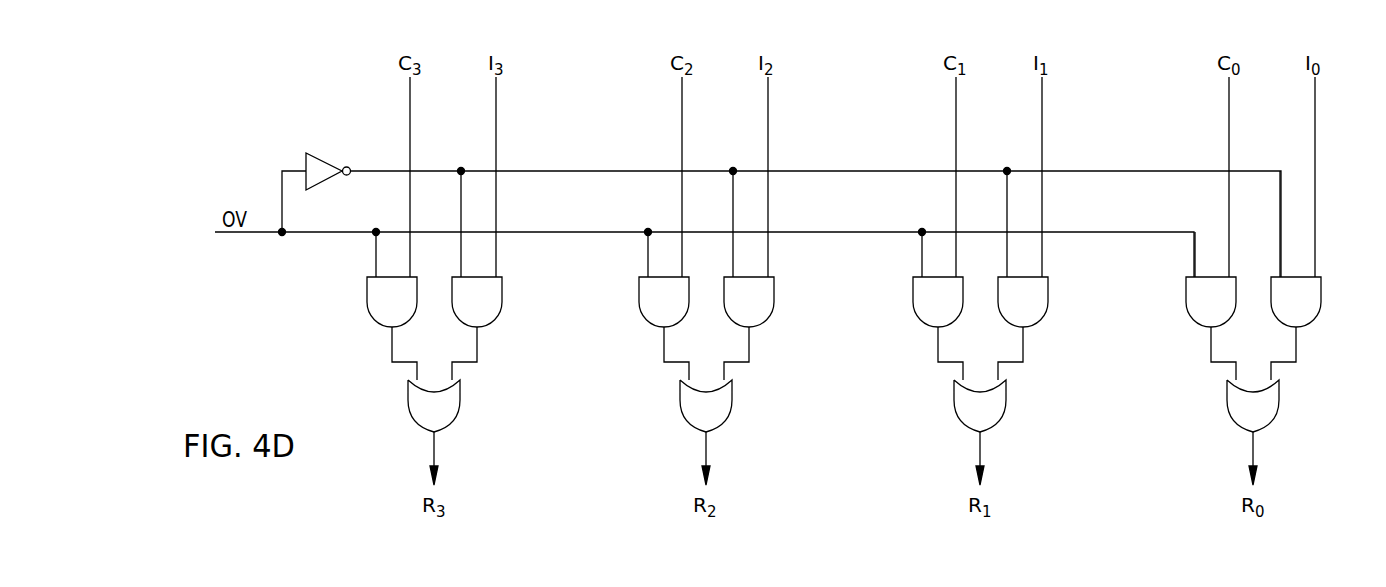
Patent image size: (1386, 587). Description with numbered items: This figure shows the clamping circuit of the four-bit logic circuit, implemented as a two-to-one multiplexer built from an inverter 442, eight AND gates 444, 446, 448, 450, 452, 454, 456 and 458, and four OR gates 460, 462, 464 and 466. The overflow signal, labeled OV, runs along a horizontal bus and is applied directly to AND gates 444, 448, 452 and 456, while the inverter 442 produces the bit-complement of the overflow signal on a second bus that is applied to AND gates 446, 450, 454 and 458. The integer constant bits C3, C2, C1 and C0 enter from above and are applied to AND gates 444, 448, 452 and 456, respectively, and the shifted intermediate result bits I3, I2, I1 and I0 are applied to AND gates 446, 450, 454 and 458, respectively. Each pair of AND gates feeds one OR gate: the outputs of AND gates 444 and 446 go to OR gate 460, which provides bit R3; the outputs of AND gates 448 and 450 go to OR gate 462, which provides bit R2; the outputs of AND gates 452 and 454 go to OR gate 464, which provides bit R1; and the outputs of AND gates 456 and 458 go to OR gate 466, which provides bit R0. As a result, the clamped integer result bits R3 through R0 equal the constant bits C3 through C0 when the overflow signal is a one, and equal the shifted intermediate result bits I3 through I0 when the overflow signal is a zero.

The inverter 442 is at (318, 152).
The AND gate 444 is at (367, 292).
The AND gate 446 is at (503, 307).
The AND gate 448 is at (639, 292).
The AND gate 450 is at (775, 307).
The AND gate 452 is at (913, 292).
The AND gate 454 is at (1049, 307).
The AND gate 456 is at (1186, 292).
The AND gate 458 is at (1322, 307).
The OR gate 460 is at (457, 413).
The OR gate 462 is at (729, 413).
The OR gate 464 is at (1003, 413).
The OR gate 466 is at (1276, 413).